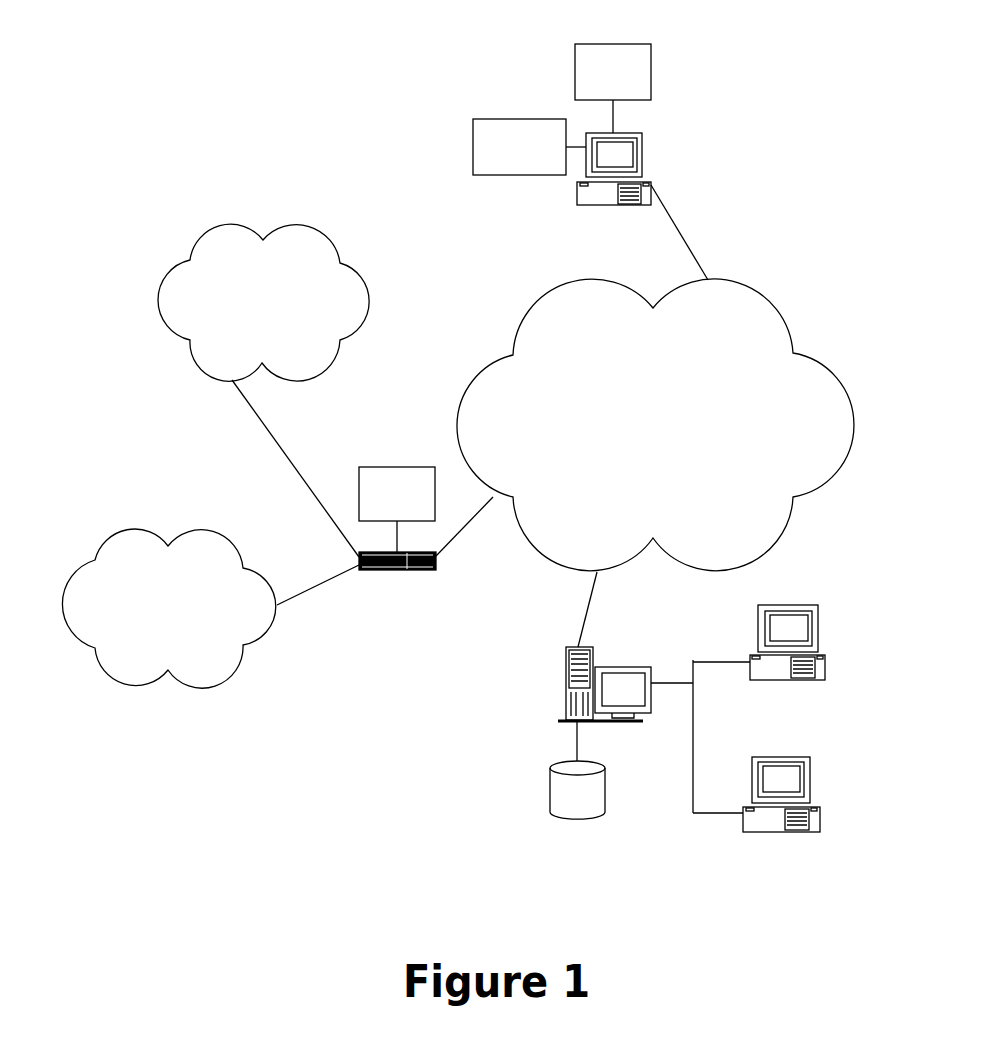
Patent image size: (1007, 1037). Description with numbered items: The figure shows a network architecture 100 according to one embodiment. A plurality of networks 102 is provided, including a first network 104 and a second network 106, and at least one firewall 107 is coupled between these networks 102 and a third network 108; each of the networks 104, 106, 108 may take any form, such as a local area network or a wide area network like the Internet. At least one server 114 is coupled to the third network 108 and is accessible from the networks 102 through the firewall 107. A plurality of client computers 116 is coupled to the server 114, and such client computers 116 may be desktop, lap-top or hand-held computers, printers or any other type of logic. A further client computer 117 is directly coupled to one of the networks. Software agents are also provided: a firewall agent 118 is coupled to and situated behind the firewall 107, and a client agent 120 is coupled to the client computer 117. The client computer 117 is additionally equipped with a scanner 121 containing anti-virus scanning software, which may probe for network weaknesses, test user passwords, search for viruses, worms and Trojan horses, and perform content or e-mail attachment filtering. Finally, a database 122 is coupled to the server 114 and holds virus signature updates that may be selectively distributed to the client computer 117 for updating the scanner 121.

The network architecture 100 is at (252, 104).
The networks 102 is at (113, 385).
The first network 104 is at (97, 554).
The second network 106 is at (347, 264).
The firewall 107 is at (357, 572).
The third network 108 is at (822, 357).
The server 114 is at (566, 690).
The client computers 116 is at (818, 640).
The client computer 117 is at (642, 155).
The firewall agent 118 is at (393, 467).
The client agent 120 is at (575, 50).
The scanner 121 is at (473, 130).
The database 122 is at (547, 792).